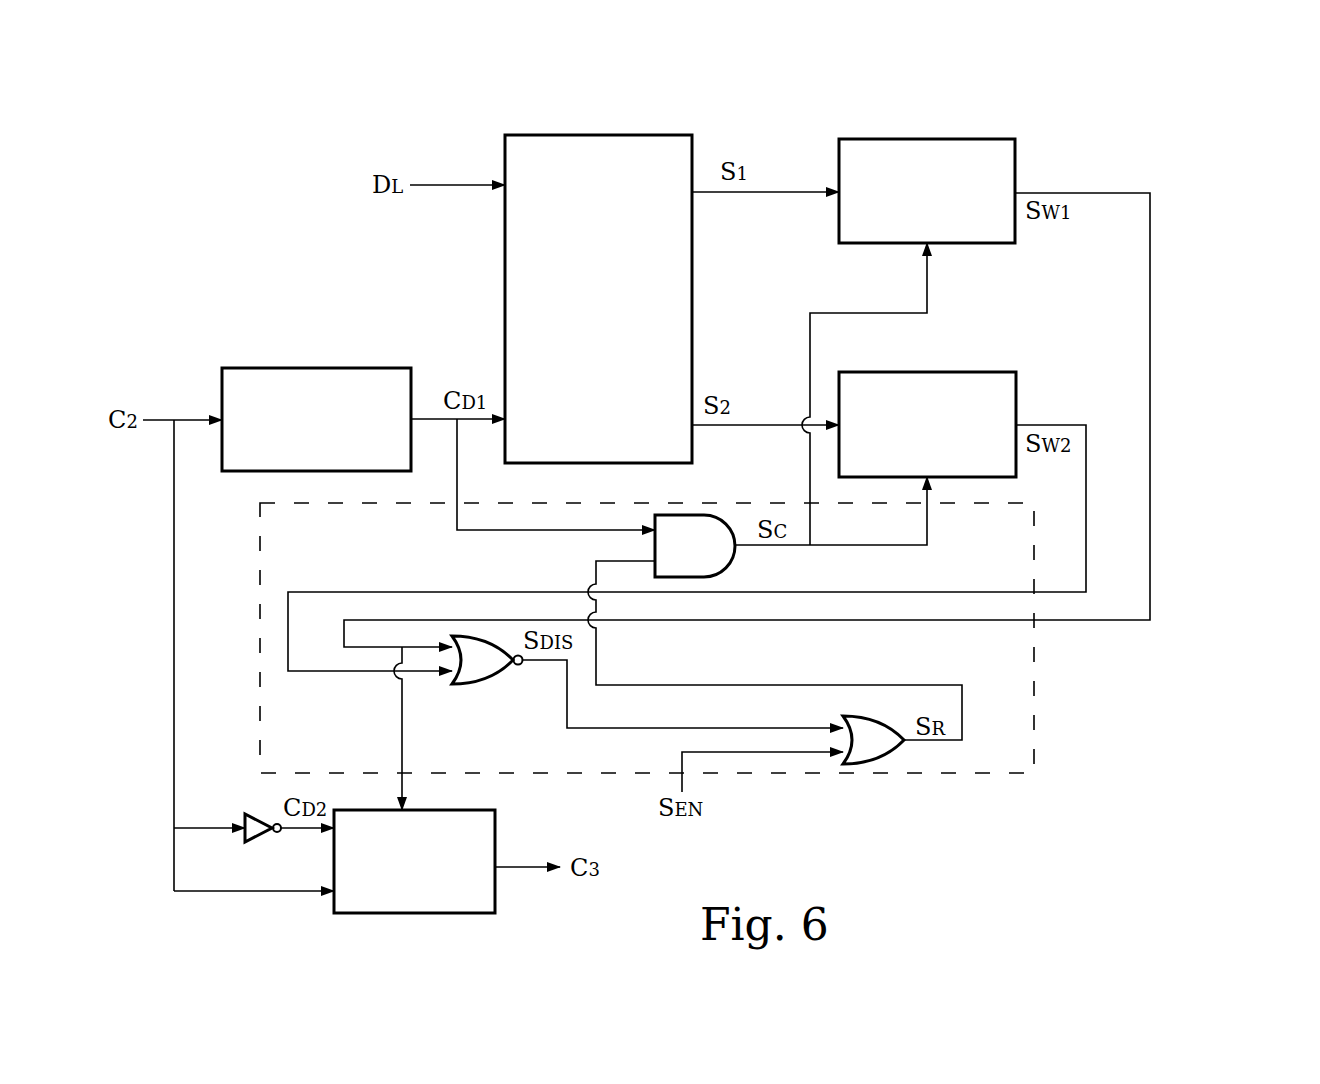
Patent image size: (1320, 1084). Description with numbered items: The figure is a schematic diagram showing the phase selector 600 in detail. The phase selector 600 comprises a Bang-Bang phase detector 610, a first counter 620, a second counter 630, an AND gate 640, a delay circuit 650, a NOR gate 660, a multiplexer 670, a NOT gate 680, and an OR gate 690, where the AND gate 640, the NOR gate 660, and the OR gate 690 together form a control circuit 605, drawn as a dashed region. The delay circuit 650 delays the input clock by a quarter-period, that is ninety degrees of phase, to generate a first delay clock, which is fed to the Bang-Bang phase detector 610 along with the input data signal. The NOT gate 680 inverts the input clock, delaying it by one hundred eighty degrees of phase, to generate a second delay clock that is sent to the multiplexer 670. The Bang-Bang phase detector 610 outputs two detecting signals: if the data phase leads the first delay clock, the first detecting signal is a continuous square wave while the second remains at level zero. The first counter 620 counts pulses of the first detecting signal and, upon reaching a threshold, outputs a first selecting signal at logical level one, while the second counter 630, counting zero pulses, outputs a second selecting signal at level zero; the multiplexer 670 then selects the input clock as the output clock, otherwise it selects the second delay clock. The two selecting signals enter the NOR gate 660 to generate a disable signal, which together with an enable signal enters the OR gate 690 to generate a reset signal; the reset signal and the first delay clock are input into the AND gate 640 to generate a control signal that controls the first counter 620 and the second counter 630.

The phase selector 600 is at (1178, 138).
The control circuit 605 is at (1034, 722).
The Bang-Bang phase detector 610 is at (692, 135).
The first counter 620 is at (1015, 150).
The second counter 630 is at (1016, 398).
The AND gate 640 is at (700, 520).
The delay circuit 650 is at (411, 390).
The NOR gate 660 is at (490, 640).
The multiplexer 670 is at (495, 843).
The NOT gate 680 is at (245, 814).
The OR gate 690 is at (872, 720).